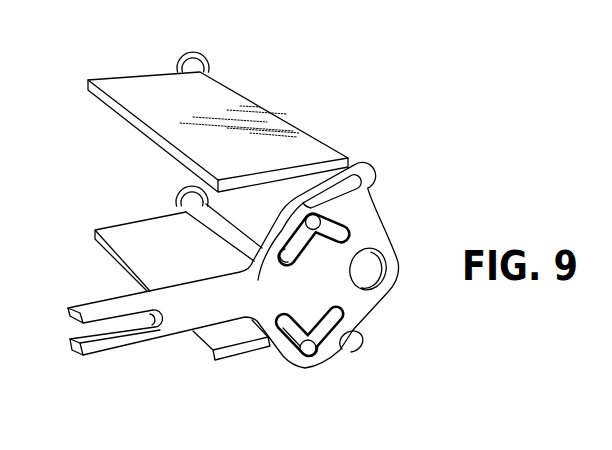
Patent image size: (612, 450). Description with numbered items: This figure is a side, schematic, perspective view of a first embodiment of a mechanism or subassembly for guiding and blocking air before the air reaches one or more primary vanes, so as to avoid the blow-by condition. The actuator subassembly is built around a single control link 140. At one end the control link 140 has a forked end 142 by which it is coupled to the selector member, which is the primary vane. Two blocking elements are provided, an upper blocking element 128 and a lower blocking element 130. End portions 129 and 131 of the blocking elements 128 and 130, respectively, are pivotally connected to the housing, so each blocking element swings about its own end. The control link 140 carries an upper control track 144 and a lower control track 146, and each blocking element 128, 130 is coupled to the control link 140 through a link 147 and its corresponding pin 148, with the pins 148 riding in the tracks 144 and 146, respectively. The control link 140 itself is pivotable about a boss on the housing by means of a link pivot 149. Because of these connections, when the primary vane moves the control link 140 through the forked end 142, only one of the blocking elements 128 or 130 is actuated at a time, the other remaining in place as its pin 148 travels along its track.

The blocking element 128 is at (233, 89).
The end portion 129 is at (207, 80).
The blocking element 130 is at (147, 258).
The end portion 131 is at (183, 198).
The control link 140 is at (167, 341).
The forked end 142 is at (90, 359).
The upper control track 144 is at (288, 256).
The lower control track 146 is at (320, 332).
The link 147 is at (378, 185).
The pin 148 is at (308, 357).
The link pivot 149 is at (378, 287).